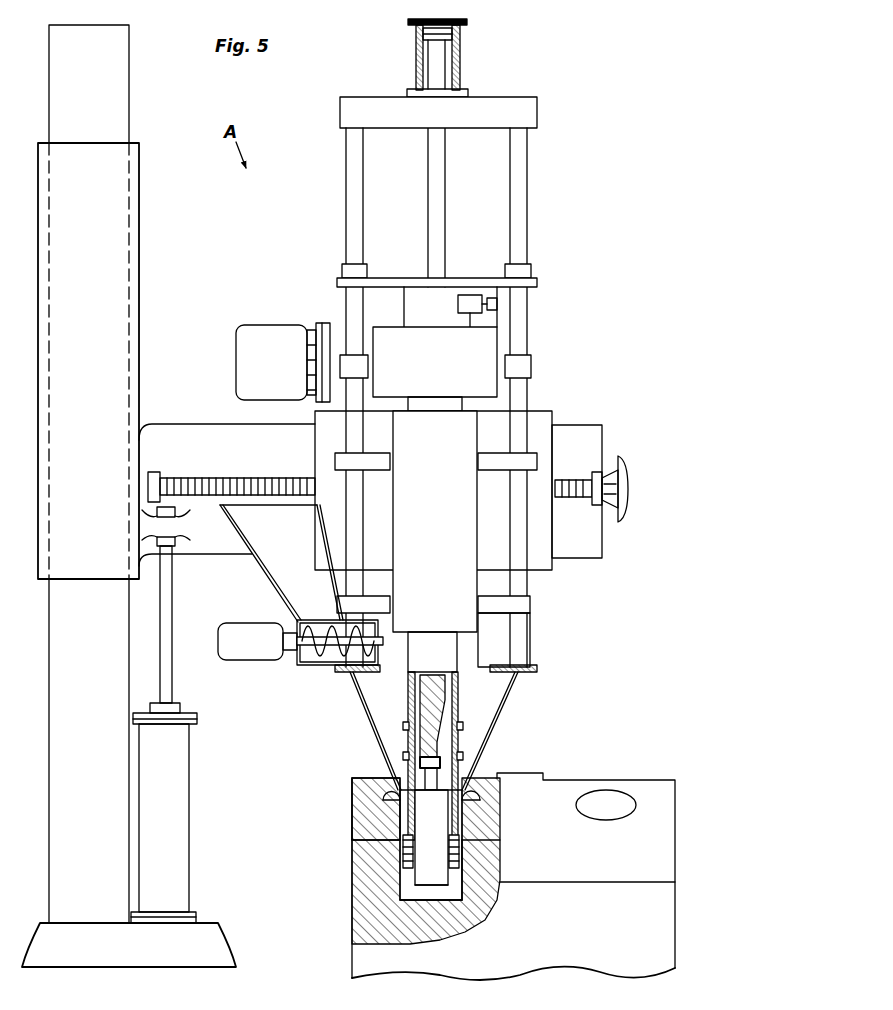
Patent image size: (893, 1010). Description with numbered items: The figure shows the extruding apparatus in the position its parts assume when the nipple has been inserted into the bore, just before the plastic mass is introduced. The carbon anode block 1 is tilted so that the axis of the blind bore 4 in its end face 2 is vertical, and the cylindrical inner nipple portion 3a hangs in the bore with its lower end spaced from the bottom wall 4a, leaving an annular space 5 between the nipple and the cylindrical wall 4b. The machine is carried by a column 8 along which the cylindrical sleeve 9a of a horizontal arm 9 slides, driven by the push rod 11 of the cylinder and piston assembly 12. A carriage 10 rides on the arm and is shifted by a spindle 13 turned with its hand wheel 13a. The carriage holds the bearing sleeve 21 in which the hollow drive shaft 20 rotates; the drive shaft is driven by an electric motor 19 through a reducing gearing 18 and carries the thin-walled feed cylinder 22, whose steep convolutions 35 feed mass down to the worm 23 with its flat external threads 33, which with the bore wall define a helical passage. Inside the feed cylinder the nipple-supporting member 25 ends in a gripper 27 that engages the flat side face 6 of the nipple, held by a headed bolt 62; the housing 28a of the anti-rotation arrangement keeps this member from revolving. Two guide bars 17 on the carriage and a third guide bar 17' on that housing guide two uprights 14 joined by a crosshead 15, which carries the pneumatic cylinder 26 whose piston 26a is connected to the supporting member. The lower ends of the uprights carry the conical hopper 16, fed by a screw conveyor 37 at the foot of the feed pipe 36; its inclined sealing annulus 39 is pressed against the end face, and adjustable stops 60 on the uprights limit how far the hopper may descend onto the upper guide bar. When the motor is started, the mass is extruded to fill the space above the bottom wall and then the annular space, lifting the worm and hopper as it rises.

The carbon anode block 1 is at (368, 940).
The end face 2 is at (555, 870).
The cylindrical inner nipple portion 3a is at (430, 874).
The blind bore 4 is at (402, 851).
The bottom wall of bore 4a is at (420, 900).
The cylindrical wall of bore 4b is at (458, 892).
The annular space 5 is at (410, 893).
The flat side face 6 is at (443, 761).
The column 8 is at (58, 681).
The arm 9 is at (173, 436).
The cylindrical sleeve 9a is at (139, 224).
The carriage 10 is at (540, 526).
The push rod 11 is at (166, 619).
The cylinder and piston assembly 12 is at (190, 786).
The spindle 13 is at (576, 482).
The hand wheel 13a is at (623, 472).
The uprights 14 is at (350, 300).
The crosshead 15 is at (530, 107).
The hopper 16 is at (482, 700).
The guide bars 17 is at (458, 529).
The third guide bar 17' is at (463, 266).
The reducing gearing 18 is at (482, 342).
The electric motor 19 is at (262, 340).
The drive shaft 20 is at (450, 648).
The bearing sleeve 21 is at (467, 582).
The feed cylinder 22 is at (460, 688).
The worm 23 is at (402, 831).
The nipple-supporting member 25 is at (436, 161).
The cylinder 26 is at (458, 53).
The piston 26a is at (450, 40).
The gripper 27 is at (455, 742).
The housing 28a is at (445, 303).
The external threads 33 is at (466, 856).
The convolutions 35 is at (404, 727).
The feed pipe 36 is at (252, 537).
The screw conveyor 37 is at (318, 665).
The sealing annulus 39 is at (384, 796).
The stops 60 is at (358, 367).
The headed bolt 62 is at (404, 770).